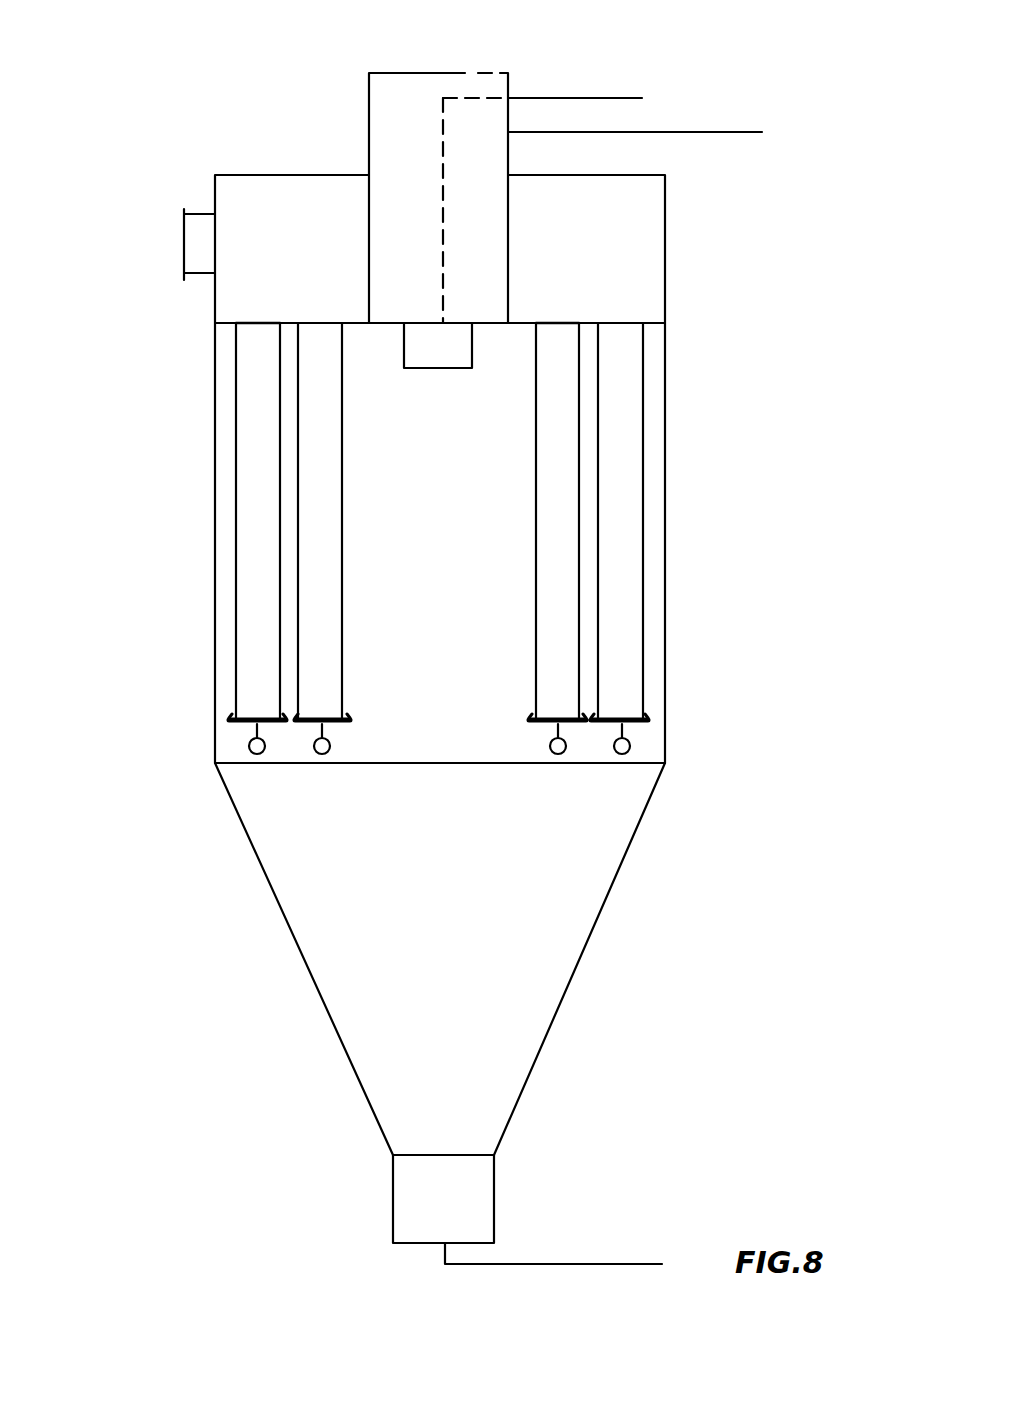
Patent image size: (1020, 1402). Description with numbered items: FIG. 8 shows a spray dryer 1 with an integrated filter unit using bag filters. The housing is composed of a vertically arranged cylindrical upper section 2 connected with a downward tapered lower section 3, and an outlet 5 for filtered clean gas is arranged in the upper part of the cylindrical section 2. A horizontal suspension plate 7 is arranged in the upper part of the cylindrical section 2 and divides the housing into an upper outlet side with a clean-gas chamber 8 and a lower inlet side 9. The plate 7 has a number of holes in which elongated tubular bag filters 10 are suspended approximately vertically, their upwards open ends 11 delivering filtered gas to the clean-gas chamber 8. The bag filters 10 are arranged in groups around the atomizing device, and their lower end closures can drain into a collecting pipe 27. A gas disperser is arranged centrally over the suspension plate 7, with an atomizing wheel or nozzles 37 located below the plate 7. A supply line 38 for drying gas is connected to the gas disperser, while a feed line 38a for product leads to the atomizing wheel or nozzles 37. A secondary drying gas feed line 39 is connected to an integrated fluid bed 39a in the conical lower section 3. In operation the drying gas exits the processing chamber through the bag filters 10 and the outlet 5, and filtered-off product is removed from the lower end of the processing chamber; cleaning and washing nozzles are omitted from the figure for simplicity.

The dust collector apparatus 1 is at (212, 825).
The cylindrical upper section 2 is at (665, 483).
The downward tapered lower section 3 is at (598, 920).
The outlet for filtered clean gas 5 is at (180, 244).
The suspension plate 7 is at (352, 321).
The clean-gas chamber 8 is at (648, 245).
The lower inlet side 9 is at (430, 752).
The bag filters 10 is at (332, 500).
The upwards open ends 11 is at (252, 322).
The collecting pipe 27 is at (260, 754).
The atomizing wheel or nozzles 37 is at (444, 358).
The supply line for drying gas 38 is at (727, 135).
The feed line for product 38a is at (617, 98).
The secondary drying gas feed line 39 is at (585, 1264).
The integrated fluid bed 39a is at (475, 1190).